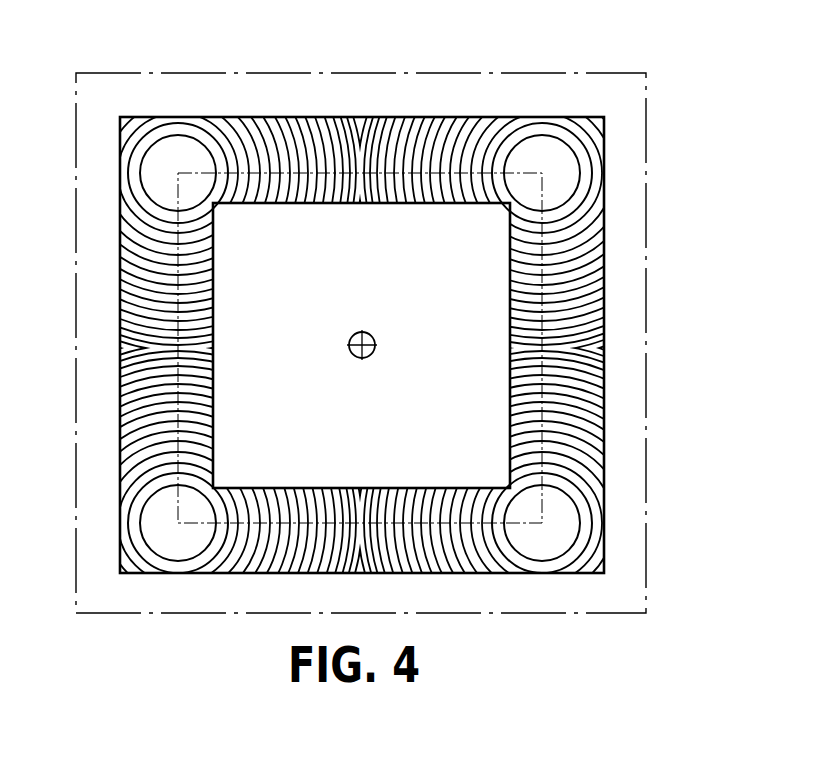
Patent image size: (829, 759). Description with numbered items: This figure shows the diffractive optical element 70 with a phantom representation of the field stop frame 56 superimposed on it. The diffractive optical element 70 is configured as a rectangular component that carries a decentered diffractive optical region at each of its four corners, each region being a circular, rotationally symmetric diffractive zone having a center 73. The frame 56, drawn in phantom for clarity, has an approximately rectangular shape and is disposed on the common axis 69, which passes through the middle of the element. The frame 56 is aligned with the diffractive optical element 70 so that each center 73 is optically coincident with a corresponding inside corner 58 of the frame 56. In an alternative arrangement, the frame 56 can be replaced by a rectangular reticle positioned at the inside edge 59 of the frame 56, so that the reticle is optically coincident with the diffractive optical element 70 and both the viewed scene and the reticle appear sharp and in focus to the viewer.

The frame 56 is at (645, 73).
The inside corner 58 is at (548, 163).
The inside edge 59 is at (256, 175).
The common axis 69 is at (372, 331).
The diffractive optical element 70 is at (603, 227).
The center 73 is at (543, 164).